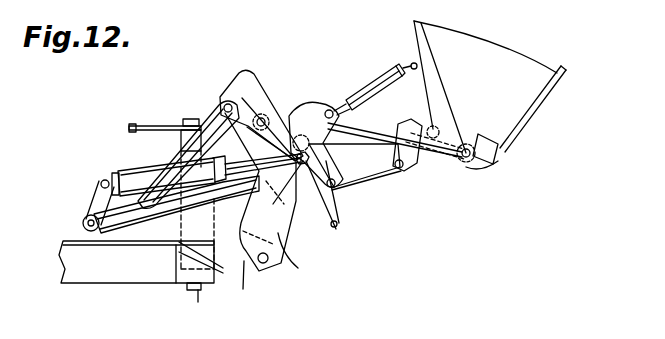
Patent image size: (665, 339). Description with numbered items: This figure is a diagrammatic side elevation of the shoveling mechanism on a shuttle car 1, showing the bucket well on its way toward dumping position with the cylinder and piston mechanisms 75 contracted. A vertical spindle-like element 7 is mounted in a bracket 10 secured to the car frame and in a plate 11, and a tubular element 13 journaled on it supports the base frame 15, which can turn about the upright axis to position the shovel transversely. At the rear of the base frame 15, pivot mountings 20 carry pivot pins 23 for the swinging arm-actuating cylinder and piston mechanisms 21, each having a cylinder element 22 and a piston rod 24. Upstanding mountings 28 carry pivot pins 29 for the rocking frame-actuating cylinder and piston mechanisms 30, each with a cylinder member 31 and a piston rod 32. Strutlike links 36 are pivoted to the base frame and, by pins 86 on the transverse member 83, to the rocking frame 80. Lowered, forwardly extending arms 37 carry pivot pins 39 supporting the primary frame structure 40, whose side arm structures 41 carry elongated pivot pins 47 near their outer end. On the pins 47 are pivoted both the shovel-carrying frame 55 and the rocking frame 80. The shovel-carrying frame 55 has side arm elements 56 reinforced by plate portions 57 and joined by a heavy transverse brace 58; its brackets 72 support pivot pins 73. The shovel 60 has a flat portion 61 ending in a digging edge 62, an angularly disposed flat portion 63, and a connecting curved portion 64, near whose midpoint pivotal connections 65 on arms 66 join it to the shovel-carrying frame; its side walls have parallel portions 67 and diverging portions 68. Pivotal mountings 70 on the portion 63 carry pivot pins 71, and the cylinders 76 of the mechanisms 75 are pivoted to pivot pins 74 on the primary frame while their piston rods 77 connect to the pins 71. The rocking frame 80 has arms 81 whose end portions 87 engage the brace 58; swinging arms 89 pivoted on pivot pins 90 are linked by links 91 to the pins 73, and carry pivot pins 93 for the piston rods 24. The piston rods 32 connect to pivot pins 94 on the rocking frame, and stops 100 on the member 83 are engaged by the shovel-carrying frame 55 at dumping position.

The shuttle car 1 is at (78, 282).
The spindle-like element 7 is at (196, 304).
The bracket 10 is at (193, 272).
The plate 11 is at (140, 124).
The tubular element 13 is at (178, 135).
The base frame 15 is at (174, 230).
The pivot mountings 20 is at (92, 212).
The swinging arm-actuating cylinder and piston mechanisms 21 is at (148, 217).
The cylinder element 22 is at (112, 228).
The pivot pin 23 is at (82, 222).
The piston rod 24 is at (260, 177).
The upstanding mountings 28 is at (97, 190).
The pivot pins 29 is at (100, 170).
The rocking frame-actuating cylinder and piston mechanisms 30 is at (133, 172).
The cylinder member 31 is at (118, 170).
The piston rod 32 is at (223, 154).
The strutlike elements or links 36 is at (198, 120).
The lowered and forwardly extending arms 37 is at (239, 285).
The pivot pins 39 is at (265, 262).
The primary frame structure 40 is at (323, 103).
The side arm structures 41 is at (296, 218).
The elongated pivot pins 47 is at (377, 137).
The shovel-carrying frame 55 is at (455, 134).
The side arm elements 56 is at (434, 128).
The elongated plate portions 57 is at (440, 153).
The transverse brace 58 is at (354, 165).
The shovel 60 is at (484, 40).
The flat portion 61 is at (551, 75).
The digging edge 62 is at (566, 66).
The angularly disposed flat portion 63 is at (411, 27).
The curved portion 64 is at (486, 167).
The pivotal connections 65 is at (468, 160).
The arms 66 is at (478, 150).
The parallel portions 67 is at (427, 53).
The diverging portions 68 is at (500, 62).
The pivotal mountings 70 is at (420, 66).
The pivot pins 71 is at (411, 62).
The brackets 72 is at (410, 149).
The pivot pins 73 is at (400, 167).
The pivot pins 74 is at (362, 88).
The hydraulic cylinder and piston mechanisms 75 is at (333, 108).
The cylinders 76 is at (378, 100).
The piston rods 77 is at (412, 72).
The rocking frame 80 is at (310, 220).
The arms 81 is at (320, 210).
The transverse member 83 is at (252, 100).
The pins 86 is at (224, 103).
The portions 87 is at (336, 223).
The swinging arms 89 is at (276, 122).
The pivot pins 90 is at (262, 114).
The links 91 is at (372, 168).
The pivot pins 93 is at (260, 192).
The pivot pins 94 is at (316, 144).
The stops 100 is at (241, 70).